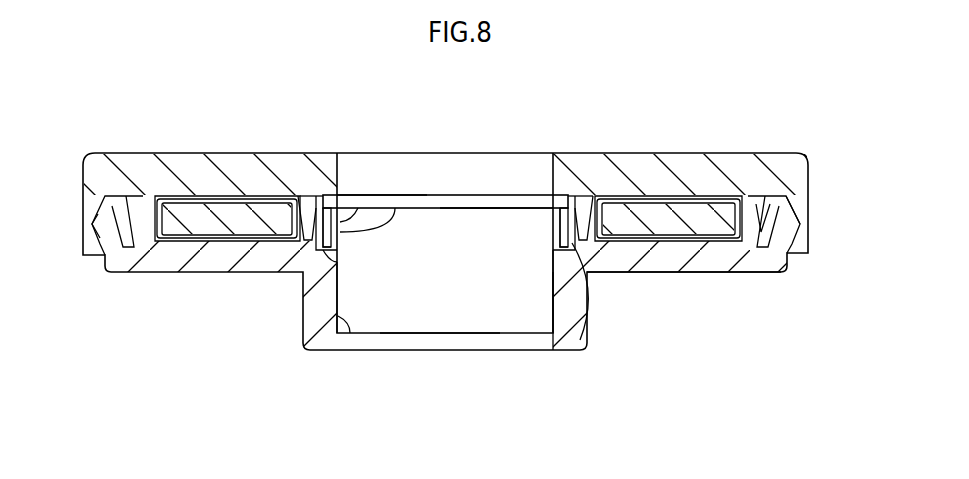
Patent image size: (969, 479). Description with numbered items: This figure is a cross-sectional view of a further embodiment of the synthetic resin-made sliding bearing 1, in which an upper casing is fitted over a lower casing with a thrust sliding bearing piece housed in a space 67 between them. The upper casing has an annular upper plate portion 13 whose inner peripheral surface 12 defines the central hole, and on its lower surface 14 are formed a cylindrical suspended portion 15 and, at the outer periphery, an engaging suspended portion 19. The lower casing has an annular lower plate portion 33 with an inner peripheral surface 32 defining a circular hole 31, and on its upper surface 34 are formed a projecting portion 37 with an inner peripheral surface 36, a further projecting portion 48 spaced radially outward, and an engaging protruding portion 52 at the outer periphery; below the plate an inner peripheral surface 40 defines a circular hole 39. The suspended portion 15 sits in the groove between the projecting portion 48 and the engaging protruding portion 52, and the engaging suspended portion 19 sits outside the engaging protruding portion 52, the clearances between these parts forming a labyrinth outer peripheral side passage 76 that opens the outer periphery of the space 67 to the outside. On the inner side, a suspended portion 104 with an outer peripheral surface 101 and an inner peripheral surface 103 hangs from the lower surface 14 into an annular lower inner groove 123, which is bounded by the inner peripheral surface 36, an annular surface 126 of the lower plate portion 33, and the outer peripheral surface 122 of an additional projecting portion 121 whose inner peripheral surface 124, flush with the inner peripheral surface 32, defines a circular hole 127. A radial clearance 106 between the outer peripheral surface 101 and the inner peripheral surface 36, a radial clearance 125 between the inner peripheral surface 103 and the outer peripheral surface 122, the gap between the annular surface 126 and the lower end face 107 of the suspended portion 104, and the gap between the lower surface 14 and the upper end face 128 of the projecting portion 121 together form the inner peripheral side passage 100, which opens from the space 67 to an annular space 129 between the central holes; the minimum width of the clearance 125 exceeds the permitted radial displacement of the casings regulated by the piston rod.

The synthetic resin-made sliding bearing 1 is at (700, 308).
The inner peripheral surface 12 is at (462, 167).
The upper plate portion 13 is at (198, 167).
The lower surface 14 is at (438, 198).
The suspended portion 15 is at (758, 222).
The engaging suspended portion 19 is at (800, 218).
The circular hole 31 is at (406, 263).
The inner peripheral surface 32 is at (340, 262).
The lower plate portion 33 is at (176, 260).
The upper surface 34 is at (225, 222).
The inner peripheral surface 36 is at (322, 258).
The projecting portion 37 is at (292, 212).
The circular hole 39 is at (465, 312).
The inner peripheral surface 40 is at (347, 335).
The projecting portion 48 is at (147, 212).
The engaging protruding portion 52 is at (758, 246).
The space 67 is at (745, 218).
The outer peripheral side passage 76 is at (104, 217).
The inner peripheral side passage 100 is at (578, 235).
The outer peripheral surface 101 is at (312, 207).
The inner peripheral surface 103 is at (358, 208).
The suspended portion 104 is at (323, 200).
The radial clearance 106 is at (584, 205).
The lower end face 107 is at (553, 336).
The projecting portion 121 is at (548, 226).
The outer peripheral surface 122 is at (577, 203).
The lower inner groove 123 is at (572, 243).
The inner peripheral surface 124 is at (395, 208).
The radial clearance 125 is at (535, 213).
The annular surface 126 is at (333, 322).
The circular hole 127 is at (484, 220).
The upper end face 128 is at (427, 207).
The annular space 129 is at (498, 202).